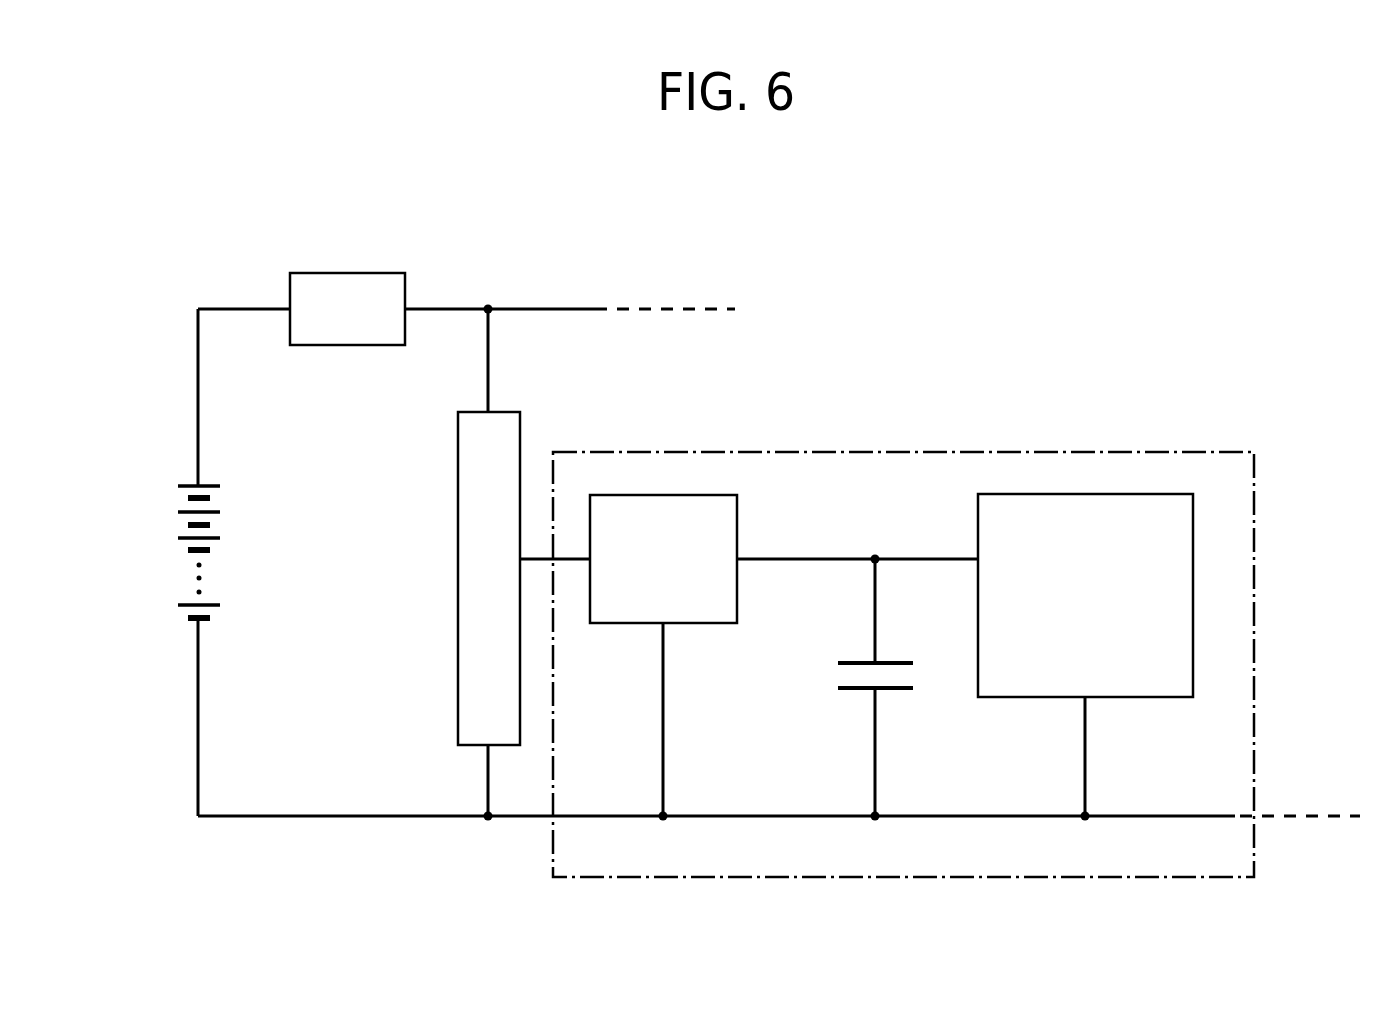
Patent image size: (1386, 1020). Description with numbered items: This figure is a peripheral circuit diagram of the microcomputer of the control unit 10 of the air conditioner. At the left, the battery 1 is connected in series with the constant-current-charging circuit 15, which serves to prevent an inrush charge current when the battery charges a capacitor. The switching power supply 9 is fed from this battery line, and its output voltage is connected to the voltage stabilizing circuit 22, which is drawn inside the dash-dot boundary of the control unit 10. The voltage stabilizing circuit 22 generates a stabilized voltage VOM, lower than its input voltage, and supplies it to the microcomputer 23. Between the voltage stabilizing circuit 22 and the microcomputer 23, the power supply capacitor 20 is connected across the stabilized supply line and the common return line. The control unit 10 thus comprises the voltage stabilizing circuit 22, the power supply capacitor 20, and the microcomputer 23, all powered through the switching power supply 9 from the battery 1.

The battery 1 is at (218, 557).
The constant-current-charging circuit 15 is at (308, 272).
The switching power supply 9 is at (507, 410).
The control unit 10 is at (1168, 452).
The voltage stabilizing circuit 22 is at (610, 493).
The power supply capacitor 20 is at (897, 653).
The microcomputer 23 is at (1015, 493).